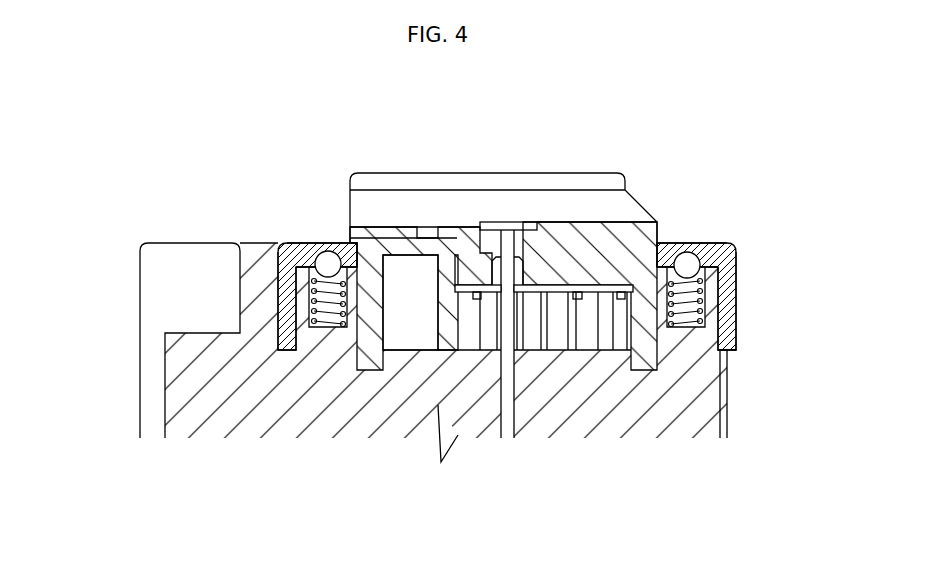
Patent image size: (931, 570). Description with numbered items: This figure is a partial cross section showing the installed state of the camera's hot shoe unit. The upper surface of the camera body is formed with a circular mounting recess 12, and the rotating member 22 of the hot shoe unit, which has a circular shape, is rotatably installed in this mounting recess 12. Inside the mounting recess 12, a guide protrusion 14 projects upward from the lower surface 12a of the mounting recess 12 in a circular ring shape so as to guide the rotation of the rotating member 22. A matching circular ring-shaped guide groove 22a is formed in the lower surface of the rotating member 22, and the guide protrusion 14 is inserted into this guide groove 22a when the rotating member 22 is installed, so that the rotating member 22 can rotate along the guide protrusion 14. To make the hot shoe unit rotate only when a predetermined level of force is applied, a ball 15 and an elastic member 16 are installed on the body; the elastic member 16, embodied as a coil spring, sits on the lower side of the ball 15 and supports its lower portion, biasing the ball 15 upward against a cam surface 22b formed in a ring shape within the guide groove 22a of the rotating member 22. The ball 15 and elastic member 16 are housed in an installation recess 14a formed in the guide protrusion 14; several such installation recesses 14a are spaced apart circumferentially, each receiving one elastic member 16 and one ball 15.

The mounting recess 12 is at (416, 286).
The lower surface of the mounting recess 12a is at (418, 340).
The guide protrusion 14 is at (303, 300).
The installation recess 14a is at (316, 313).
The ball 15 is at (328, 258).
The elastic member 16 is at (313, 282).
The rotating member 22 is at (728, 244).
The guide groove 22a is at (727, 286).
The cam surface 22b is at (732, 262).